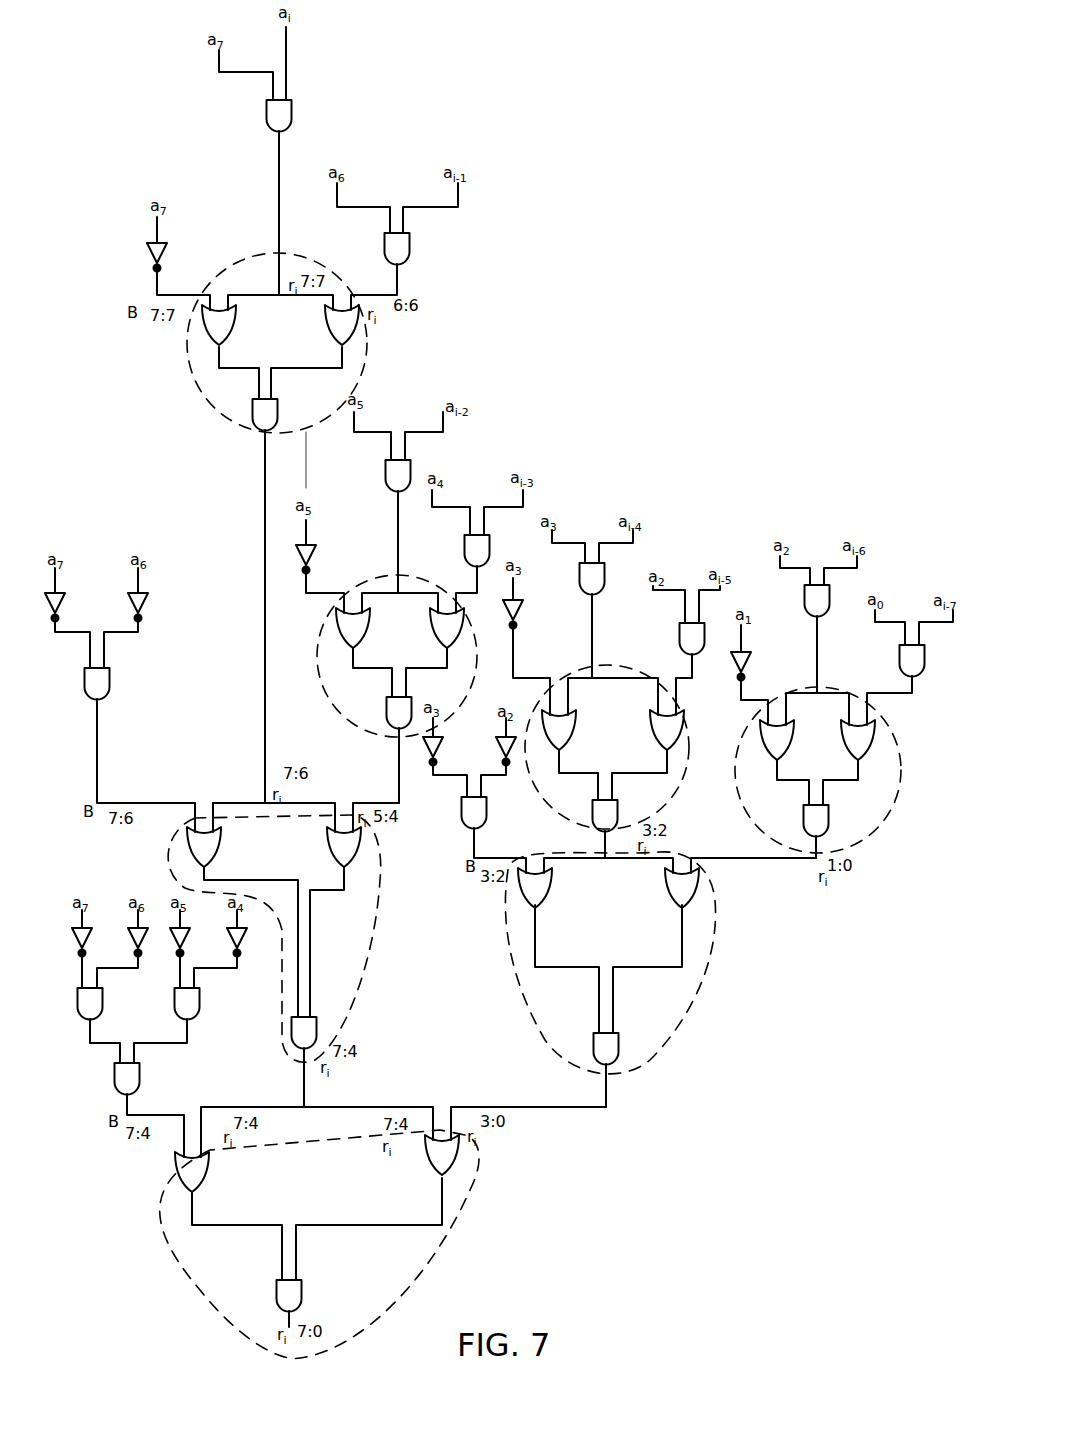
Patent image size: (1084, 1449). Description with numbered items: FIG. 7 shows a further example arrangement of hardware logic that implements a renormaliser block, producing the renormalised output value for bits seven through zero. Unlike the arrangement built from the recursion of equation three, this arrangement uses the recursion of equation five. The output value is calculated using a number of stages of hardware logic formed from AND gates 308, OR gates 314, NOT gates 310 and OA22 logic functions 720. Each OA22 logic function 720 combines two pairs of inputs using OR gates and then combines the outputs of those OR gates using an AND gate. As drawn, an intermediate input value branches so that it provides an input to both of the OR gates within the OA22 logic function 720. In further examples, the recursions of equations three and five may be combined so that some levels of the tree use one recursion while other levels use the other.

The AND gate 308 is at (262, 420).
The NOT gate 310 is at (152, 257).
The OR gate 314 is at (222, 330).
The OA22 logic function 720 is at (698, 978).